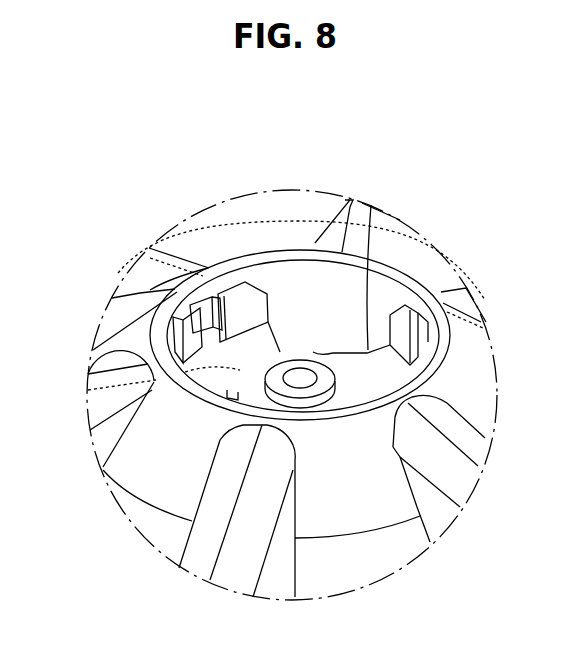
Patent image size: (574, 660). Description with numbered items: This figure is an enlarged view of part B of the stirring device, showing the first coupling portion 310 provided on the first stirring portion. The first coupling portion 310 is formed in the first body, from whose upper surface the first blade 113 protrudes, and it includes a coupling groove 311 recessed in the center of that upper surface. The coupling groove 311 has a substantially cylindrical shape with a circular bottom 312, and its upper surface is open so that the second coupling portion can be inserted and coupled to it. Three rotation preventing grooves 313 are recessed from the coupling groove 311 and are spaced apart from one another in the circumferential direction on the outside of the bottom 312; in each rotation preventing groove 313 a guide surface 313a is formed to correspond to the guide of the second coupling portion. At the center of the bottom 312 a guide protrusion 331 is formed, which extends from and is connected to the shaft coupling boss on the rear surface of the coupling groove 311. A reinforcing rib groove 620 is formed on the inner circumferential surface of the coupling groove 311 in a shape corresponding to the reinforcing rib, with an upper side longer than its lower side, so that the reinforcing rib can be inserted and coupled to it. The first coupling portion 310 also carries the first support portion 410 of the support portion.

The part B is at (243, 196).
The first blade 113 is at (463, 477).
The first coupling portion 310 is at (437, 279).
The coupling groove 311 is at (283, 282).
The bottom 312 is at (88, 418).
The rotation preventing groove 313 is at (320, 350).
The guide surface 313a is at (404, 304).
The guide protrusion 331 is at (307, 393).
The first support portion 410 is at (175, 306).
The reinforcing rib groove 620 is at (212, 299).